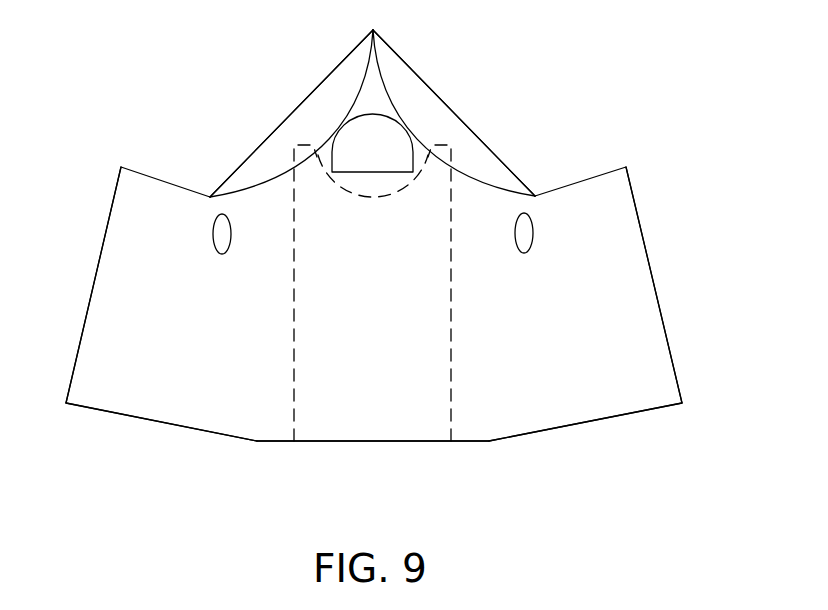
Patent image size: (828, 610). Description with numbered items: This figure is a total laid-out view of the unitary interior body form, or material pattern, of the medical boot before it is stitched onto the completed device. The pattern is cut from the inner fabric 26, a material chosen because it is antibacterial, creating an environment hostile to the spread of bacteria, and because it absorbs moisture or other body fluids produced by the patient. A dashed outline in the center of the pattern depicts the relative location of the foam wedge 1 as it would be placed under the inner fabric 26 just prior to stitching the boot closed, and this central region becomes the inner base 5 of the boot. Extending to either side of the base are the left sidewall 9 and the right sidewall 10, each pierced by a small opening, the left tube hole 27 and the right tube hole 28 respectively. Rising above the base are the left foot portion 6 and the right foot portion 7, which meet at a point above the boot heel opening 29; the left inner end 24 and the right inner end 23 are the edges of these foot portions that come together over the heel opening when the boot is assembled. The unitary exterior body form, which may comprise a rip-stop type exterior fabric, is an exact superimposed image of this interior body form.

The foam wedge 1 is at (452, 383).
The inner base 5 is at (350, 427).
The left foot portion 6 is at (249, 146).
The right foot portion 7 is at (479, 118).
The left sidewall 9 is at (200, 432).
The right sidewall 10 is at (590, 423).
The right inner end 23 is at (454, 113).
The left inner end 24 is at (291, 113).
The inner fabric 26 is at (117, 399).
The left tube hole 27 is at (213, 232).
The right tube hole 28 is at (527, 233).
The boot heel opening 29 is at (362, 145).